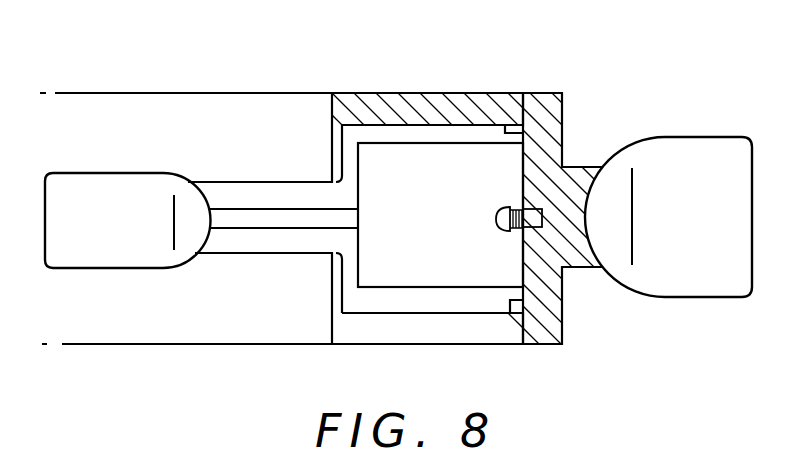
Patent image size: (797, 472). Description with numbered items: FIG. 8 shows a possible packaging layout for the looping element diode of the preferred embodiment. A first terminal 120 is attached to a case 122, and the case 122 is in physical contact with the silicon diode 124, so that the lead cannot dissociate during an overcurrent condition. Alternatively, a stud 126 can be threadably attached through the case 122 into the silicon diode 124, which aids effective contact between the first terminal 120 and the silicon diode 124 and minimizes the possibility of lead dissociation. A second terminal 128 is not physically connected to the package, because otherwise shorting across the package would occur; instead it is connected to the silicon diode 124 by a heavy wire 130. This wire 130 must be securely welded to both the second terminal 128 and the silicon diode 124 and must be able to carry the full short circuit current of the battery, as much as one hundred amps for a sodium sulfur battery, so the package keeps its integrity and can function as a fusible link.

The first terminal 120 is at (690, 137).
The case 122 is at (570, 55).
The silicon diode 124 is at (446, 238).
The stud 126 is at (507, 212).
The second terminal 128 is at (115, 258).
The heavy wire 130 is at (275, 220).